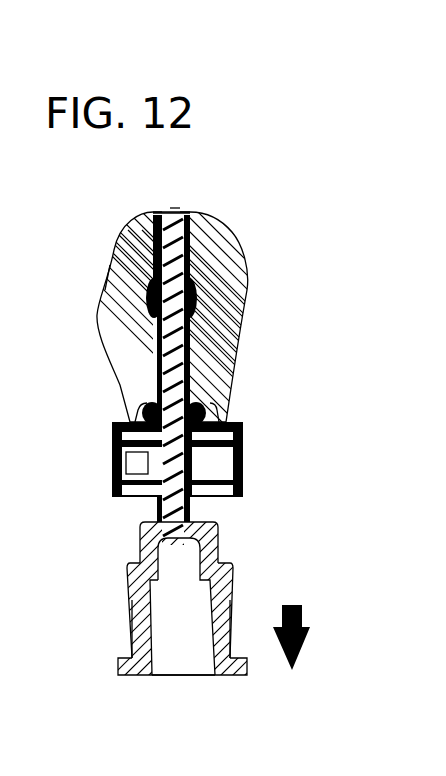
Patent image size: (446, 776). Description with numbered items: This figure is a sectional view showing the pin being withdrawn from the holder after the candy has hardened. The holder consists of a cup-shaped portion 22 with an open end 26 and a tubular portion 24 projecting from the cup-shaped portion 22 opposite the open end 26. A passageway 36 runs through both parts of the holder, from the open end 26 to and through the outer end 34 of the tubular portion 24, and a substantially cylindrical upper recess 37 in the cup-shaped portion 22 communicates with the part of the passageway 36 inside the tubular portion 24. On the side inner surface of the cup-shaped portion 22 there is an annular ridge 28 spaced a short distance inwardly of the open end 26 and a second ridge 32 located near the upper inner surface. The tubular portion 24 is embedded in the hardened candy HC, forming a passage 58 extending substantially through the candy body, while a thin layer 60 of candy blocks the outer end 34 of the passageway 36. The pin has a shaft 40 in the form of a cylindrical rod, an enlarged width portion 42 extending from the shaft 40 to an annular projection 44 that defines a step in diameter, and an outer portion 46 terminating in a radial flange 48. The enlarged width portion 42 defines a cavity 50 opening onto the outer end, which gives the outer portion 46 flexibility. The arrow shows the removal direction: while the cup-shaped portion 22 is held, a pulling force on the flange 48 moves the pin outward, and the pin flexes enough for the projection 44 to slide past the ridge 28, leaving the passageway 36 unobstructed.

The hardened candy HC is at (110, 278).
The cup-shaped portion 22 is at (243, 450).
The tubular portion 24 is at (195, 330).
The open end 26 is at (140, 505).
The annular ridge 28 is at (113, 486).
The second ridge 32 is at (113, 458).
The outer end 34 is at (185, 212).
The passageway 36 is at (160, 212).
The upper recess 37 is at (228, 395).
The shaft 40 is at (195, 370).
The enlarged width portion 42 is at (218, 533).
The annular projection 44 is at (233, 567).
The outer portion 46 is at (133, 622).
The flange 48 is at (127, 678).
The cavity 50 is at (181, 662).
The passage 58 is at (185, 238).
The thin layer 60 is at (178, 212).